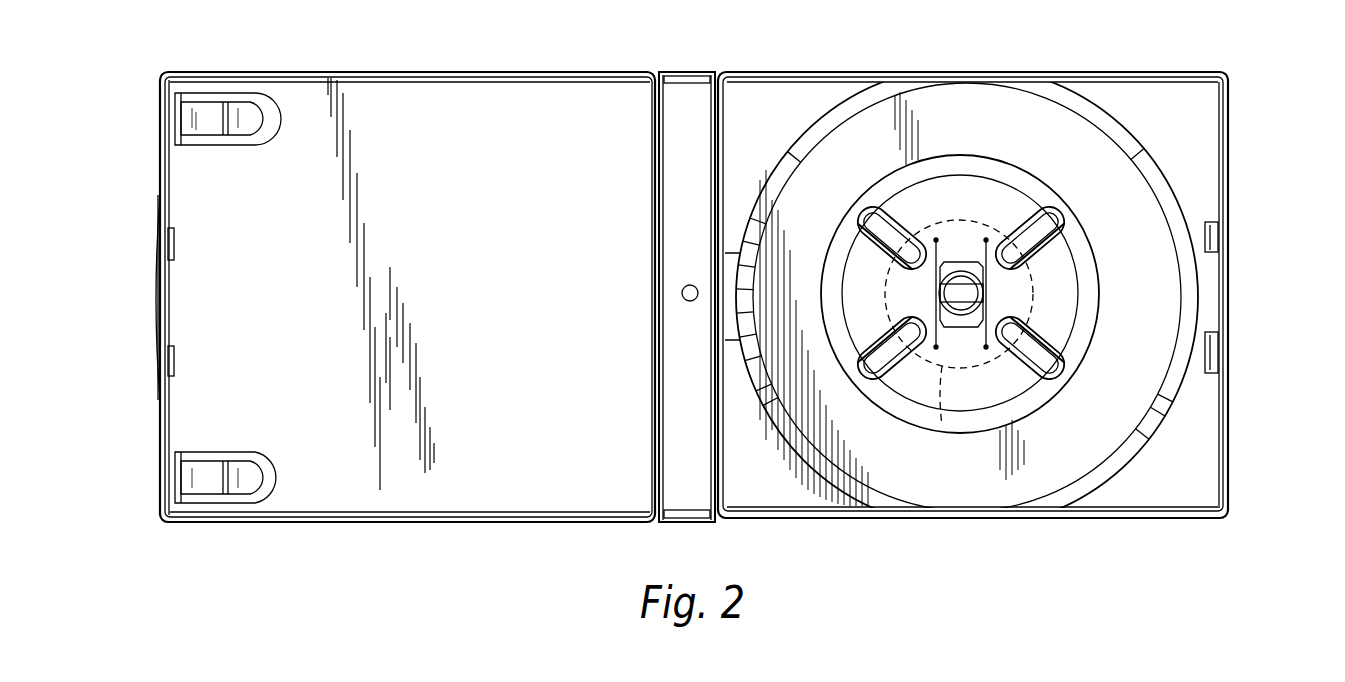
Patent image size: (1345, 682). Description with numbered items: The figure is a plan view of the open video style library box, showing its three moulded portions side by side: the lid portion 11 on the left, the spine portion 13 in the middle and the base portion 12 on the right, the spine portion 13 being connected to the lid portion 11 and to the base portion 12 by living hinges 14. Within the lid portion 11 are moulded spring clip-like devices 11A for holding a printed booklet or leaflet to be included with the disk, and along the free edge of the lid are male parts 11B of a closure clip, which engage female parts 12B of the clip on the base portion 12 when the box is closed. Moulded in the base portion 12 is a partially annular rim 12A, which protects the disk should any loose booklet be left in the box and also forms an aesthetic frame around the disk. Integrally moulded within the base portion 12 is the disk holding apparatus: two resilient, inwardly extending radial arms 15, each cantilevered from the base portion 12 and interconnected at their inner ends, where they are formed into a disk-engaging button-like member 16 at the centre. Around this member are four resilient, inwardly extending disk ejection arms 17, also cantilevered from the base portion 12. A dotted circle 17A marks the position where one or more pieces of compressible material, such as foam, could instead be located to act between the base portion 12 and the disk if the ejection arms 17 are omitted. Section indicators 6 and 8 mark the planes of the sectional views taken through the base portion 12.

The lid portion 11 is at (366, 72).
The spring clip-like devices 11A is at (212, 115).
The male parts of closure clip 11B is at (176, 250).
The base portion 12 is at (830, 72).
The partially annular rim 12A is at (770, 178).
The female parts of closure clip 12B is at (1215, 240).
The spine portion 13 is at (686, 72).
The living hinges 14 is at (700, 428).
The radial arms 15 is at (961, 243).
The disk-engaging button-like member 16 is at (1000, 296).
The disk ejection arms 17 is at (880, 230).
The dotted circle 17A is at (932, 421).
The section line 6 is at (960, 70).
The section line 8 is at (1150, 130).